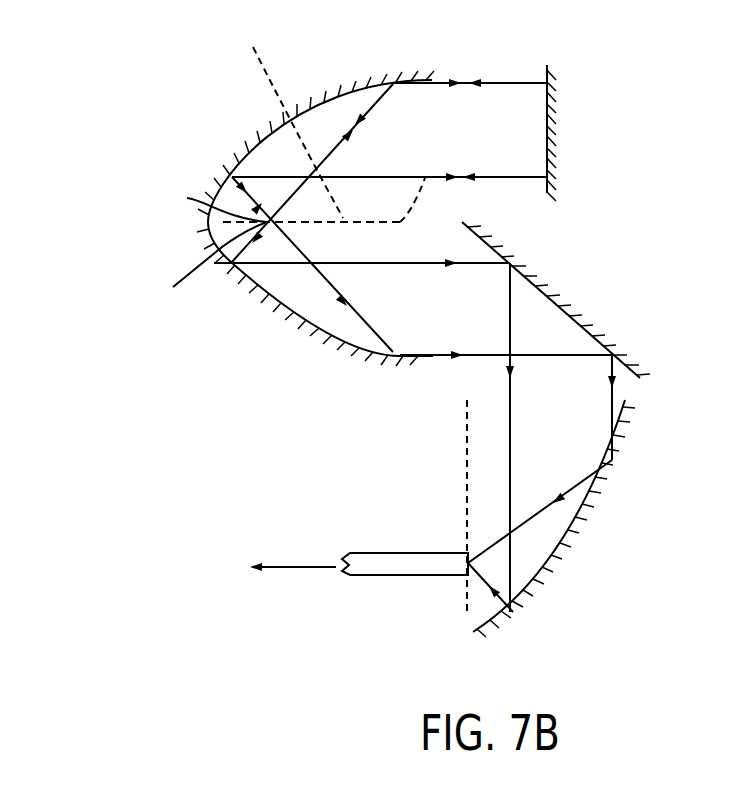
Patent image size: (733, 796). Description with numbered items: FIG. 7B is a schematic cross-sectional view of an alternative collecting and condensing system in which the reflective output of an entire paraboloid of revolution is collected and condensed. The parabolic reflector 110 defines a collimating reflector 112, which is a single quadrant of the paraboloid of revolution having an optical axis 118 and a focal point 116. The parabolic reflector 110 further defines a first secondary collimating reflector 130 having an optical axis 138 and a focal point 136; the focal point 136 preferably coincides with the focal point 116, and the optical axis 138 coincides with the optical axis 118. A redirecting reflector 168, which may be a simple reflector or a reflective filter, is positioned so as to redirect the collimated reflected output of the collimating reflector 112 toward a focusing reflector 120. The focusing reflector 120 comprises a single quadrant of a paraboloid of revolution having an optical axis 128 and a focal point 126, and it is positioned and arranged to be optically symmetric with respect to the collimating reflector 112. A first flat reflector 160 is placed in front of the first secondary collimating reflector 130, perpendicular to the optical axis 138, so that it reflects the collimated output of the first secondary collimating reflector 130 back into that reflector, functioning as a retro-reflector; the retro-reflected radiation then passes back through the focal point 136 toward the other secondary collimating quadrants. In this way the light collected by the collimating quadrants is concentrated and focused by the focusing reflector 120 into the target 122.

The parabolic reflector 110 is at (298, 210).
The collimating reflector 112 is at (347, 334).
The focal point 116 is at (207, 203).
The optical axis 118 is at (425, 177).
The focusing reflector 120 is at (607, 487).
The target 122 is at (432, 553).
The focal point 126 is at (478, 561).
The optical axis 128 is at (462, 443).
The first secondary collimating reflector 130 is at (348, 98).
The focal point 136 is at (147, 262).
The optical axis 138 is at (304, 118).
The first flat reflector 160 is at (545, 128).
The redirecting reflector 168 is at (550, 298).